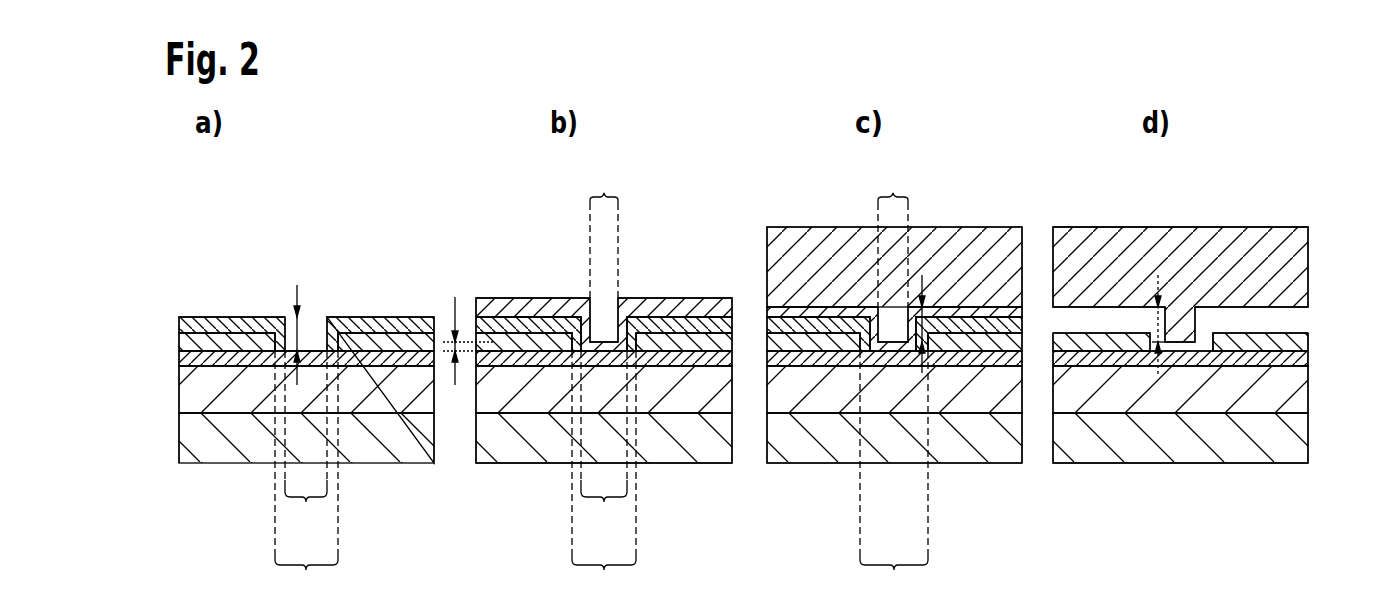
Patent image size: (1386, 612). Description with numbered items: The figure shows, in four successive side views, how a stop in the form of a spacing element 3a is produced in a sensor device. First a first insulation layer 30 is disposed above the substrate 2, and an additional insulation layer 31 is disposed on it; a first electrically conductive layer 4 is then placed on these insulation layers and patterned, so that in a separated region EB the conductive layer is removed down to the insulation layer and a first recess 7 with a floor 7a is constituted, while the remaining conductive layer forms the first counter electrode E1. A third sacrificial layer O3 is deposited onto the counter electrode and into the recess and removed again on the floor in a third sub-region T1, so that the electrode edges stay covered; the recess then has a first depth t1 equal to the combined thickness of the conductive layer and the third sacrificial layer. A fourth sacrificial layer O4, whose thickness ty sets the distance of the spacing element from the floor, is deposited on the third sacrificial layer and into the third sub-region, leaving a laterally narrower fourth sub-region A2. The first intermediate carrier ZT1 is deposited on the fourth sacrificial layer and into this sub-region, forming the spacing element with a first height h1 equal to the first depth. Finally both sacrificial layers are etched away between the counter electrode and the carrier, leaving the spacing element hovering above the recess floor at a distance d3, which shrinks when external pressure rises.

The substrate 2 is at (200, 438).
The first insulation layer 30 is at (200, 390).
The additional insulation layer 31 is at (185, 358).
The first electrically conductive layer 4 is at (186, 340).
The third sacrificial layer O3 is at (232, 326).
The fourth sacrificial layer O4 is at (518, 306).
The first intermediate carrier ZT1 is at (818, 256).
The spacing element 3a is at (1196, 325).
The first recess 7 is at (304, 330).
The floor 7a is at (314, 351).
The first depth t1 is at (297, 286).
The distance d3 is at (455, 297).
The thickness ty is at (469, 270).
The first counter electrode E1 is at (494, 348).
The third sub-region T1 is at (456, 446).
The separated region EB is at (601, 478).
The fourth sub-region A2 is at (749, 236).
The first height h1 is at (924, 312).